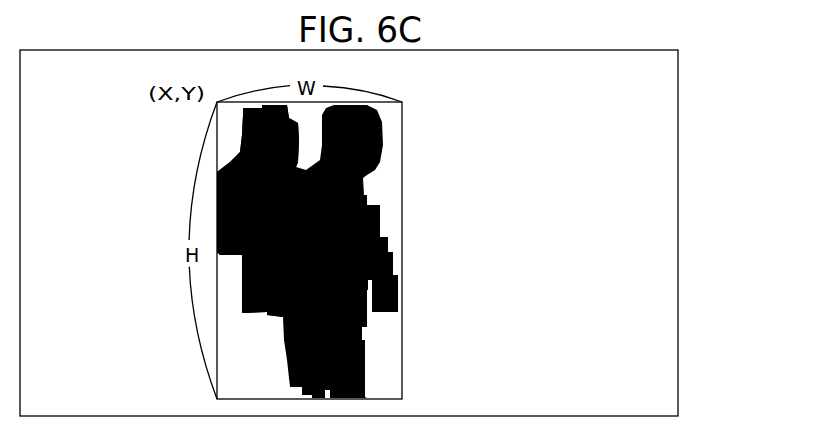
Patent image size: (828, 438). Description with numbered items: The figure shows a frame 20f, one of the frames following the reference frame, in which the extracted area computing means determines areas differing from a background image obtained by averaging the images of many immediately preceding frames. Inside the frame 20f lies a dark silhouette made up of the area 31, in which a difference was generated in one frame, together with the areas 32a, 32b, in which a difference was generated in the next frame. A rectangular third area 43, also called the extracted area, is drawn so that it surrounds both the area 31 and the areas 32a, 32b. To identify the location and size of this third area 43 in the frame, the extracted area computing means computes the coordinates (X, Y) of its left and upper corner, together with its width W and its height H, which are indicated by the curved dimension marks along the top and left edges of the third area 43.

The frame 20f is at (678, 248).
The third area (extracted area) 43 is at (402, 162).
The area in which a difference is generated 31 is at (240, 150).
The area in which a difference is generated 32a is at (400, 297).
The area in which a difference is generated 32b is at (252, 314).